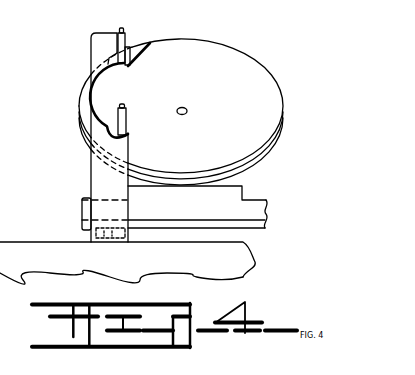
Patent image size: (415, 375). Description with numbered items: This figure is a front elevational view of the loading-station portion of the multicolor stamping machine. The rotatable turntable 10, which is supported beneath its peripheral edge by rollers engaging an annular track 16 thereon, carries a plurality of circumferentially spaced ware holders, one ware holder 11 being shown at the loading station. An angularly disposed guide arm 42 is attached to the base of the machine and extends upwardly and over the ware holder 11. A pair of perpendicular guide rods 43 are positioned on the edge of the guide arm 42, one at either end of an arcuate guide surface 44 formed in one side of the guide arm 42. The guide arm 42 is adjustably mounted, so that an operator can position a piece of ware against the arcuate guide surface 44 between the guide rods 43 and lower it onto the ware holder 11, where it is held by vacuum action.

The rotatable turntable 10 is at (242, 212).
The ware holder 11 is at (263, 161).
The annular track 16 is at (252, 223).
The guide arm 42 is at (96, 196).
The guide rods 43 is at (128, 34).
The arcuate guide surface 44 is at (100, 83).